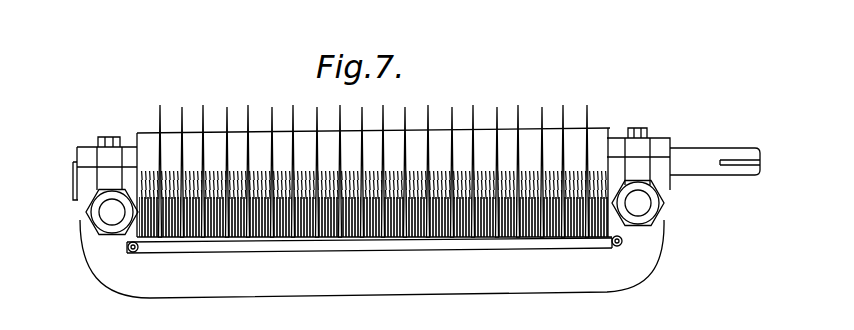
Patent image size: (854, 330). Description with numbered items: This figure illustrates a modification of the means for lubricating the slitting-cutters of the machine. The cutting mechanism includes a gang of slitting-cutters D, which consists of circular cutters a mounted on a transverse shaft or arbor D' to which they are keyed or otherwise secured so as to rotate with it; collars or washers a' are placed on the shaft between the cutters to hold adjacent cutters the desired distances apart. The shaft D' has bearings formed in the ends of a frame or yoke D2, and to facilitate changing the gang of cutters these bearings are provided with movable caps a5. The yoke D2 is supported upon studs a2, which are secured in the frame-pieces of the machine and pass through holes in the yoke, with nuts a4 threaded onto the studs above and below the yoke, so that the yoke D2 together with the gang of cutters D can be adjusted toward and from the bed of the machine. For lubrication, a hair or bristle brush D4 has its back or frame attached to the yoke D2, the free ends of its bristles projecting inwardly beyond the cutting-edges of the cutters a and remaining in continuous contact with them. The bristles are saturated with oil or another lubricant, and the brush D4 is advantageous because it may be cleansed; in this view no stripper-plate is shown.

The circular cutter a is at (374, 153).
The collar or washer a' is at (366, 156).
The stud a2 is at (689, 197).
The nut a4 is at (689, 241).
The movable cap a5 is at (80, 146).
The gang of slitting-cutters D is at (374, 155).
The shaft or arbor D' is at (715, 145).
The frame or yoke D2 is at (472, 293).
The hair or bristle brush D4 is at (352, 253).